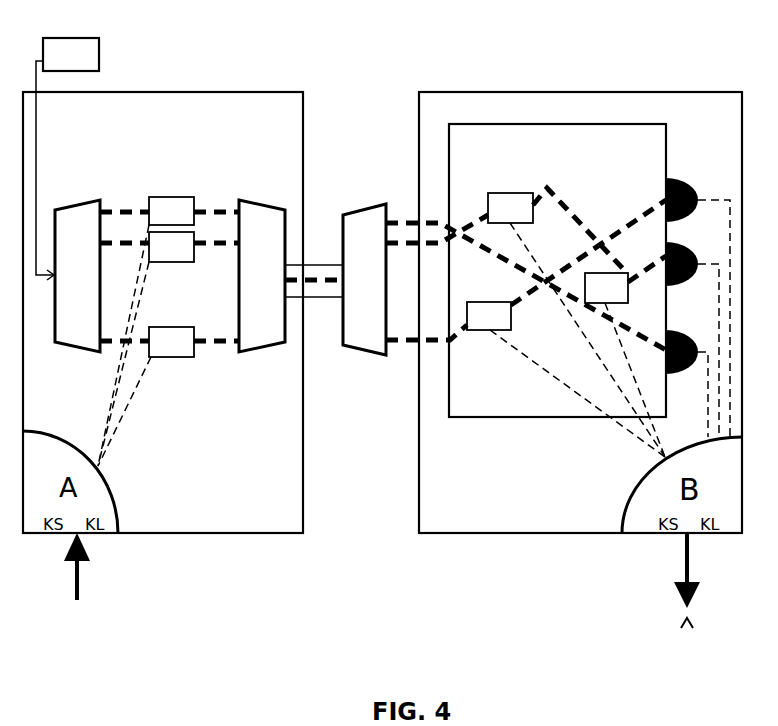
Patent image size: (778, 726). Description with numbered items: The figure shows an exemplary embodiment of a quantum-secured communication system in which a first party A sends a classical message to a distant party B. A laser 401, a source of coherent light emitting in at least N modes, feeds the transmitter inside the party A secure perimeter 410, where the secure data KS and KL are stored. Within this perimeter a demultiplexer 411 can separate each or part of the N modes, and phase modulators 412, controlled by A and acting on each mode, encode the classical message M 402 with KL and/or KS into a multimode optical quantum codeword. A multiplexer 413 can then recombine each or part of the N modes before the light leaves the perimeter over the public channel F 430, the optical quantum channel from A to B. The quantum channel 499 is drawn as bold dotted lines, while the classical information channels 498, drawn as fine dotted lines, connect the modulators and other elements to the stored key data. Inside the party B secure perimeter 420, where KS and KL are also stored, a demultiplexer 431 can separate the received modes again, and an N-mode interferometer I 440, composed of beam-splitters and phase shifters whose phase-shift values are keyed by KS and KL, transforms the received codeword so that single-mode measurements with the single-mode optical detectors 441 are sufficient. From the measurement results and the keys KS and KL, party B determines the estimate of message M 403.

The laser 401 is at (87, 37).
The classical message M 402 is at (88, 643).
The estimate of message M 403 is at (708, 658).
The party A secure perimeter 410 is at (261, 91).
The demultiplexer 411 is at (87, 207).
The phase modulators 412 is at (162, 207).
The multiplexer 413 is at (250, 205).
The party B secure perimeter 420 is at (695, 92).
The public channel F 430 is at (356, 295).
The demultiplexer 431 is at (355, 205).
The interferometer I 440 is at (615, 128).
The single-mode optical detectors 441 is at (690, 180).
The classical information channels 498 is at (133, 406).
The quantum channel 499 is at (213, 347).